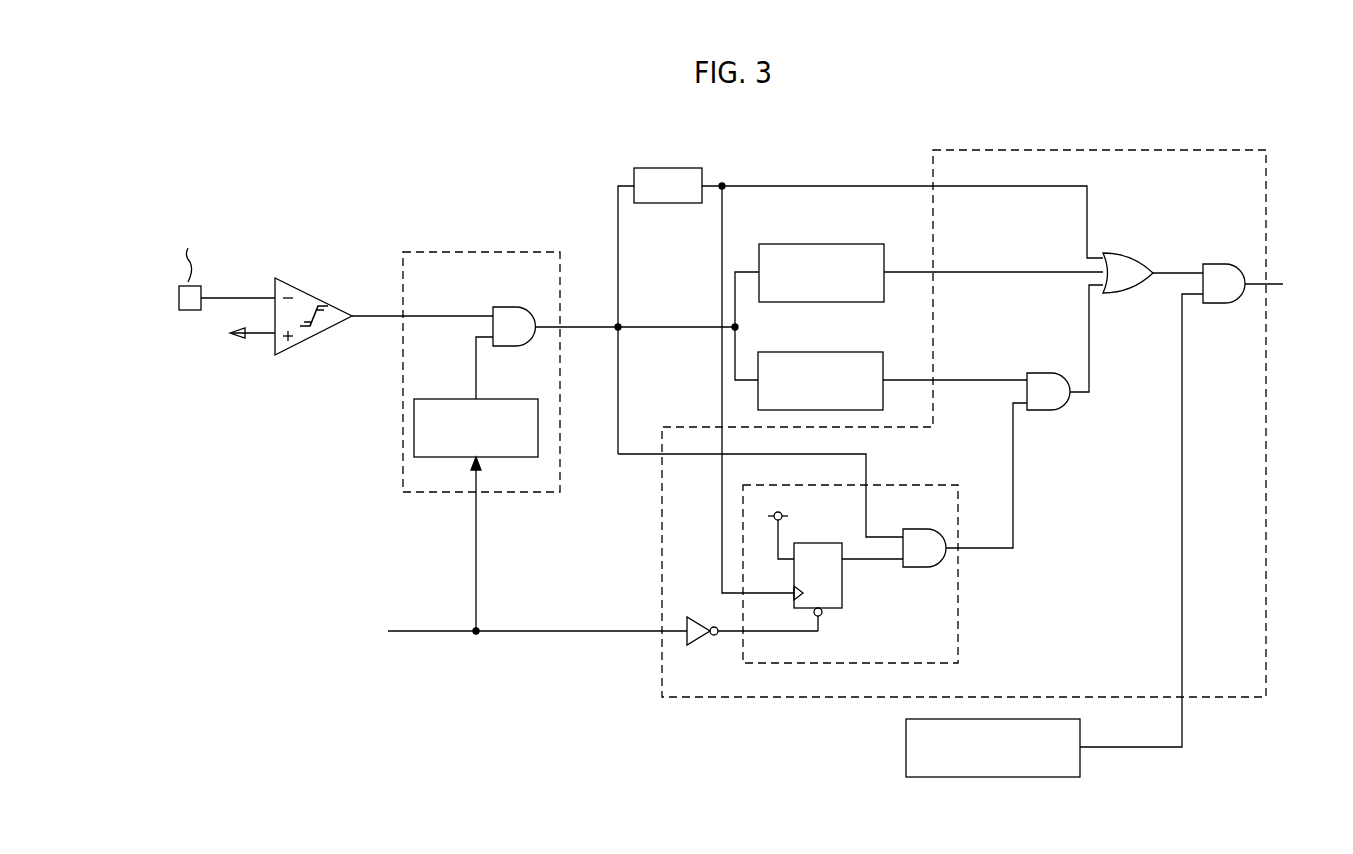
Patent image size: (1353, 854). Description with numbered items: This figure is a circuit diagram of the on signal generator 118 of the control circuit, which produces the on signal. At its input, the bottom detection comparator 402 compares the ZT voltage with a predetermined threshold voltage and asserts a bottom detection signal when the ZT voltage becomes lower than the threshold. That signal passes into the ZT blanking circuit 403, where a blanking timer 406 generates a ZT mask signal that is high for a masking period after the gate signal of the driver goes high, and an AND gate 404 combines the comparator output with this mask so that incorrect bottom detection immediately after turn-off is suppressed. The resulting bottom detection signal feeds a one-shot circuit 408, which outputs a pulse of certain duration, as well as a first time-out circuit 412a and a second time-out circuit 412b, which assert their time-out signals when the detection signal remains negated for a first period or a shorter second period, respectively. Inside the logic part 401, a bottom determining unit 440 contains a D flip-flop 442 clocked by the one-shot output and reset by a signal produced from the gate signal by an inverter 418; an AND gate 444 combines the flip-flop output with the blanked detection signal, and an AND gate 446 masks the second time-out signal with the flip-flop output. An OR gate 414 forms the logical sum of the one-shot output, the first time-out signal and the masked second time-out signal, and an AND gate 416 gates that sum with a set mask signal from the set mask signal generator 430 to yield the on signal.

The on signal generator 118 is at (662, 811).
The logic part 401 is at (1092, 148).
The bottom detection comparator 402 is at (300, 287).
The ZT blanking circuit 403 is at (452, 252).
The AND gate 404 is at (522, 292).
The blanking timer 406 is at (496, 397).
The one-shot circuit 408 is at (672, 166).
The first time-out circuit 412a is at (830, 244).
The second time-out circuit 412b is at (830, 352).
The OR gate 414 is at (1116, 254).
The AND gate 416 is at (1212, 264).
The inverter 418 is at (700, 647).
The set mask signal generator 430 is at (1008, 779).
The bottom determining unit 440 is at (960, 630).
The D flip-flop 442 is at (814, 545).
The AND gate 444 is at (920, 569).
The AND gate 446 is at (1048, 412).